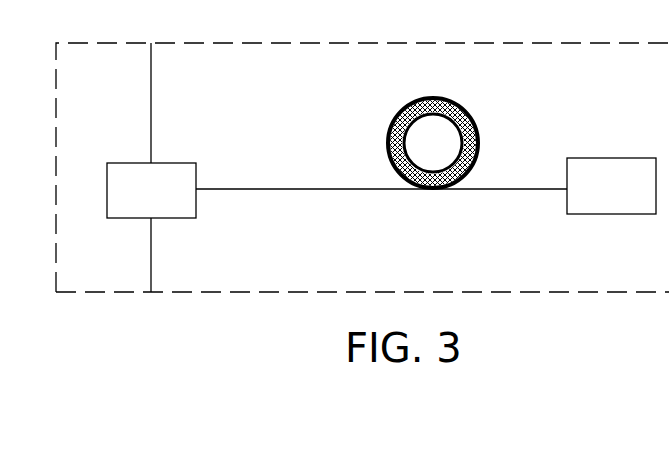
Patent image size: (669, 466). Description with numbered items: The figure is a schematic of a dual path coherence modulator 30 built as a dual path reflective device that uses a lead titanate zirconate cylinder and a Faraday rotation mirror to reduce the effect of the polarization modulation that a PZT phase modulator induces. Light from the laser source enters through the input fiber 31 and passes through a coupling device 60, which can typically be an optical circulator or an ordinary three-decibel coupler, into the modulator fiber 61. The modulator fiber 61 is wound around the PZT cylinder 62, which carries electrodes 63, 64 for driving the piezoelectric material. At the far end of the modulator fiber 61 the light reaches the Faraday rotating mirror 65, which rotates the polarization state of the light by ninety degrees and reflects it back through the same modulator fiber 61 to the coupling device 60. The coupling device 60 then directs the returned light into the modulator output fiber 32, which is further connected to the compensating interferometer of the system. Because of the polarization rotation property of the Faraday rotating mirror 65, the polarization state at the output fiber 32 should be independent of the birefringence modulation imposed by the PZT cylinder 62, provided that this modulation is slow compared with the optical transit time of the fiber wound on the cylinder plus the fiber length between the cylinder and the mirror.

The modulator 30 is at (362, 155).
The input fiber 31 is at (129, 103).
The modulator output fiber 32 is at (129, 255).
The coupling device 60 is at (165, 202).
The modulator fiber 61 is at (381, 207).
The PZT cylinder 62 is at (456, 143).
The electrode 63 is at (411, 105).
The electrode 64 is at (426, 100).
The Faraday rotating mirror 65 is at (627, 197).